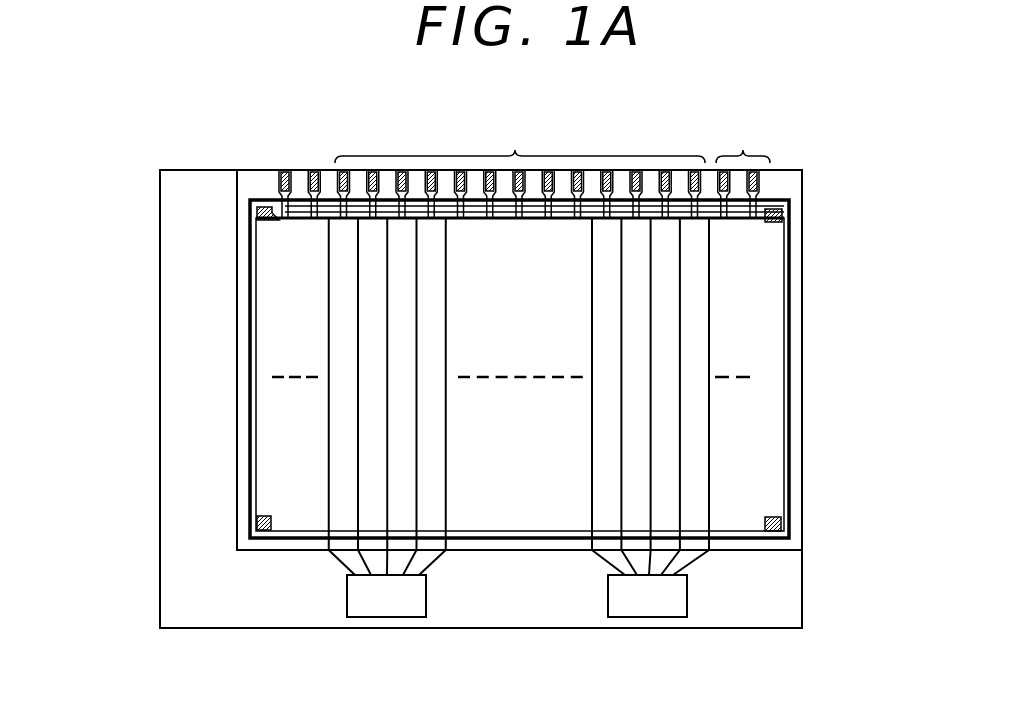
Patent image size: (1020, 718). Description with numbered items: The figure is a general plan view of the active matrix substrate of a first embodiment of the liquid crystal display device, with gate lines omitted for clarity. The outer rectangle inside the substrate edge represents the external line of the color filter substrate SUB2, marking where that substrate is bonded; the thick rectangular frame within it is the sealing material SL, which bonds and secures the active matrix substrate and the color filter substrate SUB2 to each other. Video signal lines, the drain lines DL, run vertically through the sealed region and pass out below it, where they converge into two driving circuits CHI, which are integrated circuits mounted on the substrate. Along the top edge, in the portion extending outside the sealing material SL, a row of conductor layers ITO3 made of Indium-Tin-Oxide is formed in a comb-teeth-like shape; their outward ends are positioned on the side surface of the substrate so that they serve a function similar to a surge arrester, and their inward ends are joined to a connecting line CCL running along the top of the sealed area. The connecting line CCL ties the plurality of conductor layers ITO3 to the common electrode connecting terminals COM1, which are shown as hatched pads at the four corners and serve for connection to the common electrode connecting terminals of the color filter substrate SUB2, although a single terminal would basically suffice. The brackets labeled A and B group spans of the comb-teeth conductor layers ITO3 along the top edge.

The color filter substrate SUB2 is at (237, 397).
The common electrode connecting terminals COM1 is at (267, 207).
The conductor layers ITO3 is at (762, 190).
The connecting line CCL is at (757, 222).
The sealing material SL is at (790, 330).
The drain lines DL is at (710, 468).
The driving circuits CHI is at (390, 605).
The region A is at (520, 141).
The region B is at (743, 141).